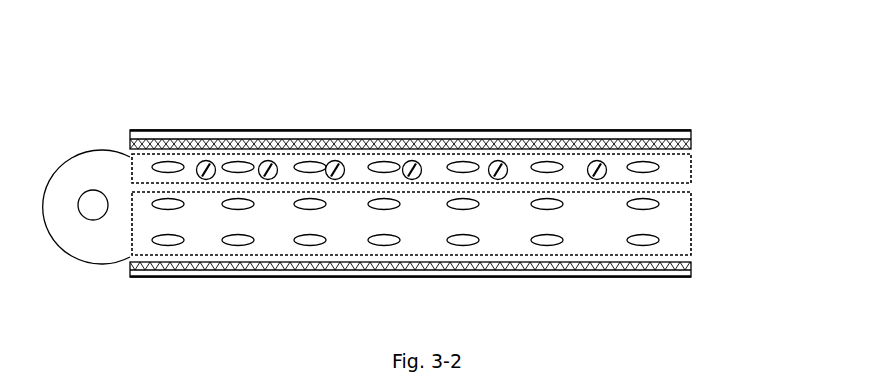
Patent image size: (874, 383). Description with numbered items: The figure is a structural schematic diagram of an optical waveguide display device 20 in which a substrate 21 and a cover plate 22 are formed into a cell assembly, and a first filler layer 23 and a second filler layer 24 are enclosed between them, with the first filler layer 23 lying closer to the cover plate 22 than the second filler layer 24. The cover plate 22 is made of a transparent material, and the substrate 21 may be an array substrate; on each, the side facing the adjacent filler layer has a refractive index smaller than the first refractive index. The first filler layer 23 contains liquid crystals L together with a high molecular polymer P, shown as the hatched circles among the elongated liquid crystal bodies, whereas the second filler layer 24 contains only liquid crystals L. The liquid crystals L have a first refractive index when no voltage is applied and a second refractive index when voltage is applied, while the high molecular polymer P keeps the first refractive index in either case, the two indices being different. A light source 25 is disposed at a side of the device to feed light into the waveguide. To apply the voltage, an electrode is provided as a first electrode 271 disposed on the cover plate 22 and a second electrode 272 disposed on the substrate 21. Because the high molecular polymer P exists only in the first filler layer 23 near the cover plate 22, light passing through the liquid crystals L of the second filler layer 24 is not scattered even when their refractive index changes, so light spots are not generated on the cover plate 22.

The optical waveguide display device 20 is at (413, 30).
The substrate 21 is at (662, 278).
The cover plate 22 is at (613, 131).
The first filler layer 23 is at (692, 178).
The second filler layer 24 is at (692, 242).
The light source 25 is at (63, 160).
The first electrode 271 is at (692, 145).
The second electrode 272 is at (692, 267).
The liquid crystals L is at (313, 155).
The high molecular polymer P is at (421, 153).